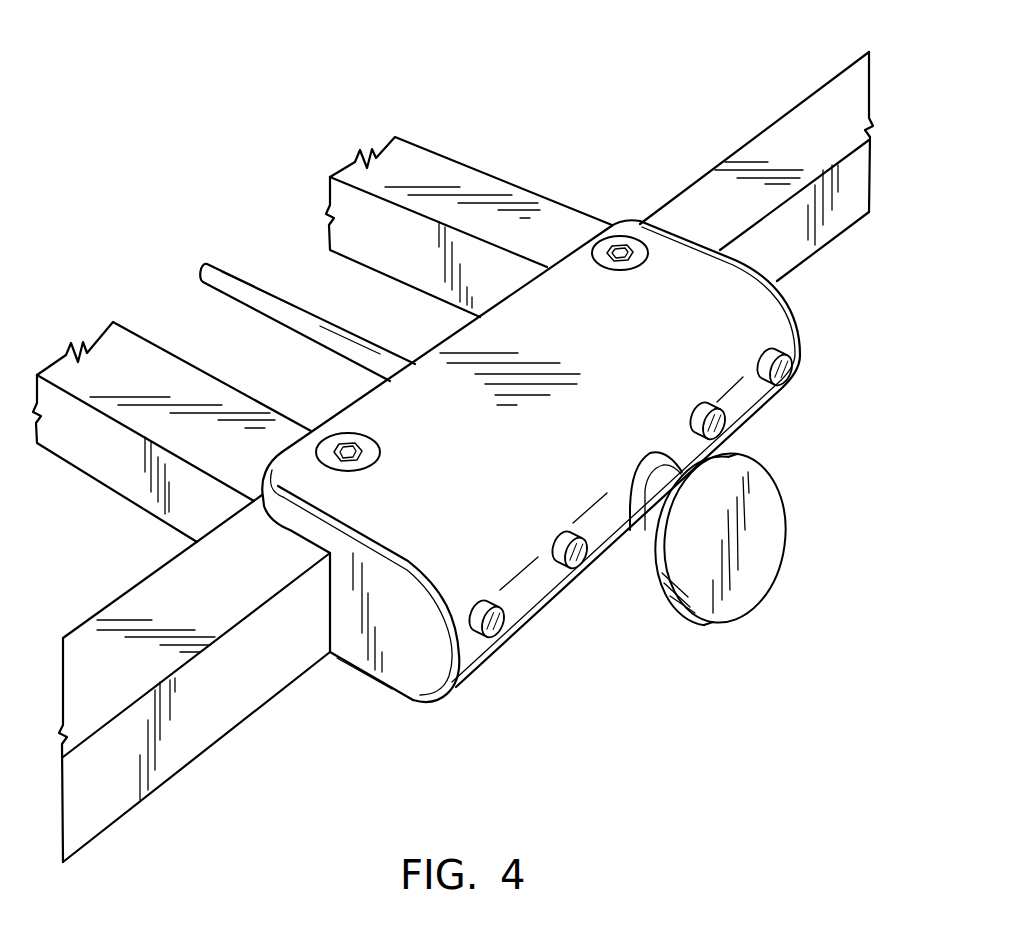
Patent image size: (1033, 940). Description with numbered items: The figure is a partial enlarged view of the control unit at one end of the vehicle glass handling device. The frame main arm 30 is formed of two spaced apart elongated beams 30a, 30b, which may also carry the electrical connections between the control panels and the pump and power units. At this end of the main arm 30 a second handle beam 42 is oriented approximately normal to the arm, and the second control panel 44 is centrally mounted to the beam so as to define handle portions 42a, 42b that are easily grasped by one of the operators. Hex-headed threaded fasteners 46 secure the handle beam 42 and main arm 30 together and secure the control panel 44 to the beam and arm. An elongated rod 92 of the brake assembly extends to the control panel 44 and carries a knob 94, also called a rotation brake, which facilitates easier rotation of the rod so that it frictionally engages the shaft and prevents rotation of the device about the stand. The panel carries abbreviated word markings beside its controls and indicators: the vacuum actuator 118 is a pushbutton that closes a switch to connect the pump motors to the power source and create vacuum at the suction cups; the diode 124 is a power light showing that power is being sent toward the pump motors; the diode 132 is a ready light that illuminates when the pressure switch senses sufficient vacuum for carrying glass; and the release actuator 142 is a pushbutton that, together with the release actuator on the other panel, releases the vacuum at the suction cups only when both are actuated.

The frame main arm 30 is at (322, 323).
The elongated beam 30a is at (103, 470).
The elongated beam 30b is at (552, 132).
The second handle beam 42 is at (466, 468).
The handle portion 42a is at (100, 818).
The handle portion 42b is at (823, 80).
The second control panel 44 is at (460, 696).
The hex-headed threaded fastener 46 is at (622, 248).
The elongated rod 92 is at (247, 292).
The knob 94 is at (743, 606).
The vacuum actuator 118 is at (498, 628).
The diode 132 is at (578, 568).
The diode 124 is at (722, 430).
The second release actuator 142 is at (792, 367).